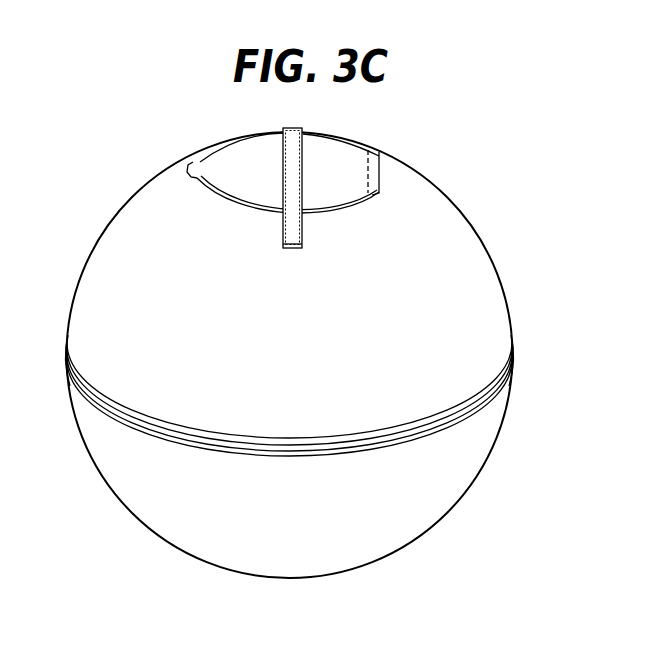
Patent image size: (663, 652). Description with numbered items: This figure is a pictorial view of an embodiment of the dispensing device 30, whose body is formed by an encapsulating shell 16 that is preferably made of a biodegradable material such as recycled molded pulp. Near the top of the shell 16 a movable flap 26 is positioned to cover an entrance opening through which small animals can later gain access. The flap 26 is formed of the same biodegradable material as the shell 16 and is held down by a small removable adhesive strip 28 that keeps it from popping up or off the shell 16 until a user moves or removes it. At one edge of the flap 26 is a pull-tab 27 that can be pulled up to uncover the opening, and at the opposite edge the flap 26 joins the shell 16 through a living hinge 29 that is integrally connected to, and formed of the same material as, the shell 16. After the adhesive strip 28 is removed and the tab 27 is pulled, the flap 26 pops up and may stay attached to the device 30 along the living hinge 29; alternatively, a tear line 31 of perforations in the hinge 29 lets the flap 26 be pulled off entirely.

The encapsulating shell 16 is at (447, 223).
The movable flap 26 is at (247, 157).
The pull-tab 27 is at (180, 177).
The removable adhesive strip 28 is at (293, 233).
The living hinge 29 is at (375, 162).
The device 30 is at (65, 197).
The tear line 31 is at (368, 173).